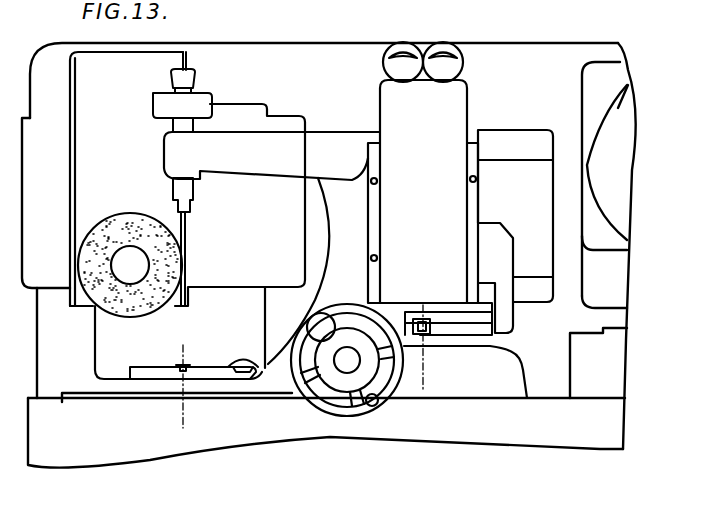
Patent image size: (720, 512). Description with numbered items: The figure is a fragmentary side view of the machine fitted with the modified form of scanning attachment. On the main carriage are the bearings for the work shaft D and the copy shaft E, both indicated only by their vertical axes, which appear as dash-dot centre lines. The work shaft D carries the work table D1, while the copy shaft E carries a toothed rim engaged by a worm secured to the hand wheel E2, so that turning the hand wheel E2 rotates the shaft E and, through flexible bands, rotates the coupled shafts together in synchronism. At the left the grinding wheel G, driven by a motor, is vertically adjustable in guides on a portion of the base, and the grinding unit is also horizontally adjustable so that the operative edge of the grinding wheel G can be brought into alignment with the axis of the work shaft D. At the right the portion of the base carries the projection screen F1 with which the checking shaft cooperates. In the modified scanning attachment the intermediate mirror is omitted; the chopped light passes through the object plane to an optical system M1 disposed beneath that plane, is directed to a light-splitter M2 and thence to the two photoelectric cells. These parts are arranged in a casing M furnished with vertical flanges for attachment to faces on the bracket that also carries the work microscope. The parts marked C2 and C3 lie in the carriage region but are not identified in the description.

The spindle adjusting knob C2 is at (197, 80).
The overarm of grinding head C3 is at (352, 142).
The casing M is at (452, 100).
The optical system M1 is at (420, 326).
The light-splitter M2 is at (507, 231).
The copy shaft E is at (428, 385).
The hand wheel E2 is at (323, 412).
The work shaft D is at (190, 433).
The work table D1 is at (128, 378).
The grinding wheel G is at (97, 287).
The projection screen F1 is at (628, 70).